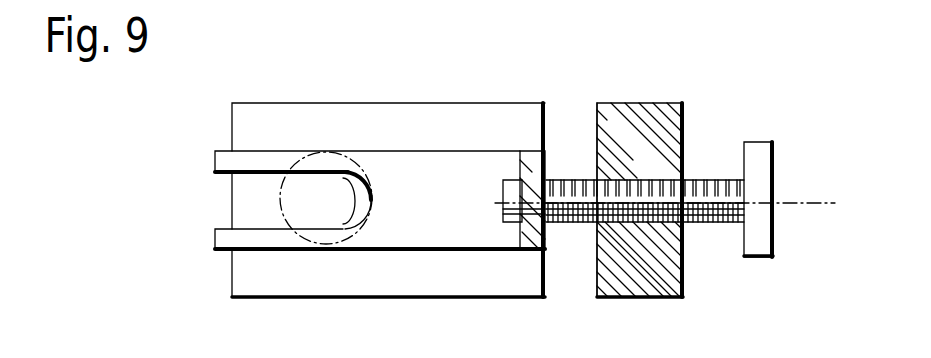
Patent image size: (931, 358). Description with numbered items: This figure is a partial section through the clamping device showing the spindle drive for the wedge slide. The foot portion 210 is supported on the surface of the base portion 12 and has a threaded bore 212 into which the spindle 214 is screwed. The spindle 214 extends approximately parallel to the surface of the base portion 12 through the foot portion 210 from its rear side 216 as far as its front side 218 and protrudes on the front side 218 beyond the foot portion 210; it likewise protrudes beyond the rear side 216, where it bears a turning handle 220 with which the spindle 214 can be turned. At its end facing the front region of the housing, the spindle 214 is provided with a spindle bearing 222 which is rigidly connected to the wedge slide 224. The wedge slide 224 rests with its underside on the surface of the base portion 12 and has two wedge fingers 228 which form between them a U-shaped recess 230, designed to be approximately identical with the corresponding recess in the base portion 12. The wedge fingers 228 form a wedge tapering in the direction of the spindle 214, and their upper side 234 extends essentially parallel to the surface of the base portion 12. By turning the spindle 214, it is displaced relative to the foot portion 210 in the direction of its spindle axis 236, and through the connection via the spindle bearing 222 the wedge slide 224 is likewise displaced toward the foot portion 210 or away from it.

The base portion 12 is at (365, 298).
The wedge fingers 228 is at (215, 163).
The U-shaped recess 230 is at (246, 174).
The upper side of the wedge fingers 234 is at (277, 160).
The wedge slide 224 is at (417, 160).
The spindle bearing 222 is at (530, 250).
The threaded bore 212 is at (643, 222).
The spindle 214 is at (708, 224).
The foot portion 210 is at (640, 116).
The front side 218 is at (584, 105).
The rear side 216 is at (694, 118).
The turning handle 220 is at (771, 160).
The spindle axis 236 is at (822, 210).